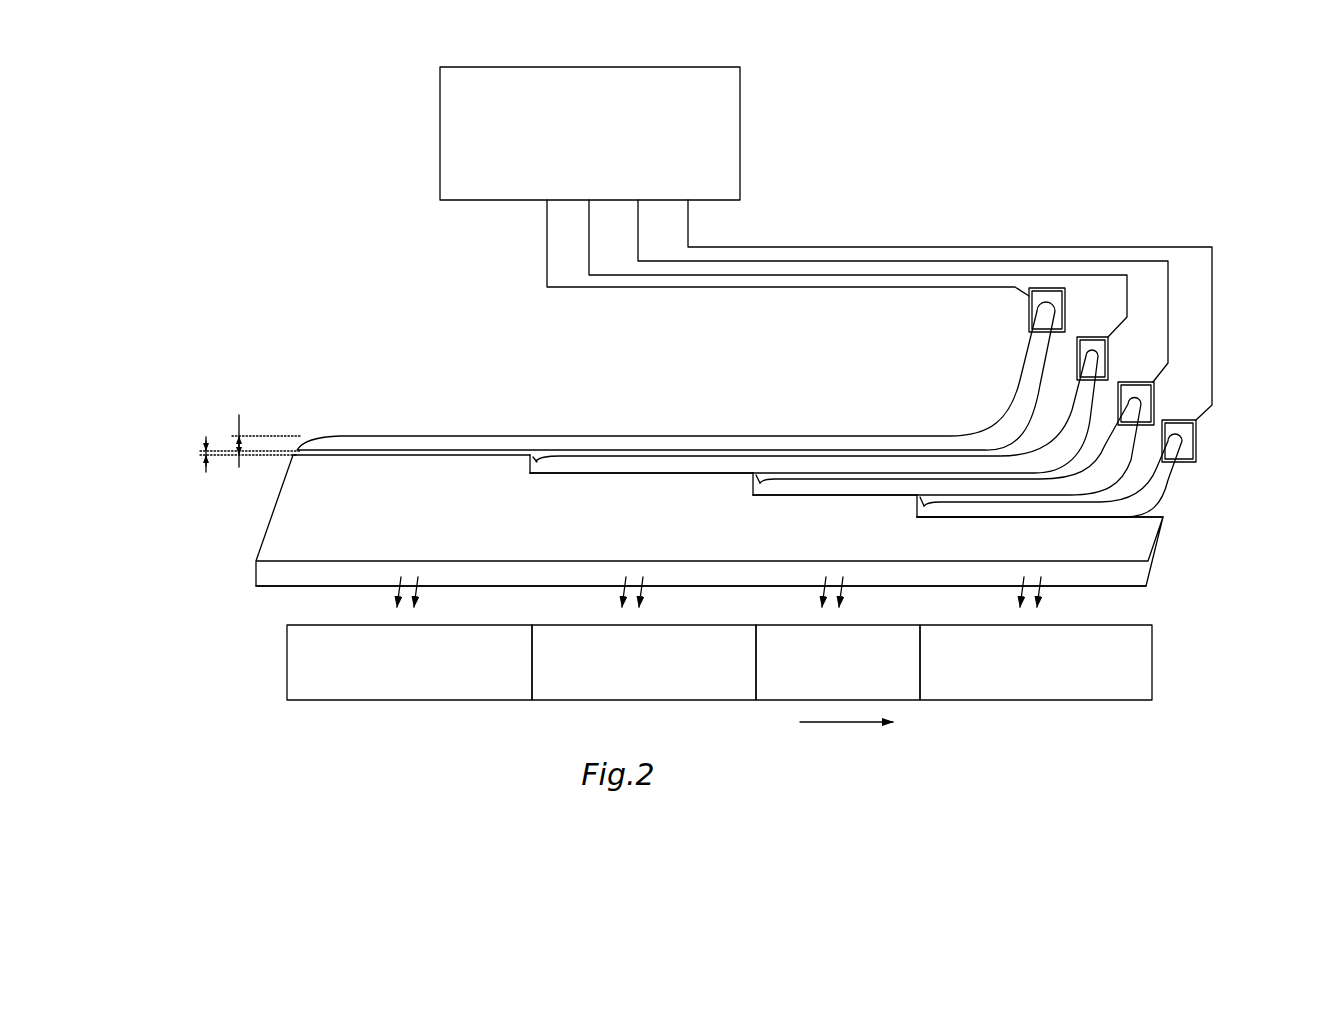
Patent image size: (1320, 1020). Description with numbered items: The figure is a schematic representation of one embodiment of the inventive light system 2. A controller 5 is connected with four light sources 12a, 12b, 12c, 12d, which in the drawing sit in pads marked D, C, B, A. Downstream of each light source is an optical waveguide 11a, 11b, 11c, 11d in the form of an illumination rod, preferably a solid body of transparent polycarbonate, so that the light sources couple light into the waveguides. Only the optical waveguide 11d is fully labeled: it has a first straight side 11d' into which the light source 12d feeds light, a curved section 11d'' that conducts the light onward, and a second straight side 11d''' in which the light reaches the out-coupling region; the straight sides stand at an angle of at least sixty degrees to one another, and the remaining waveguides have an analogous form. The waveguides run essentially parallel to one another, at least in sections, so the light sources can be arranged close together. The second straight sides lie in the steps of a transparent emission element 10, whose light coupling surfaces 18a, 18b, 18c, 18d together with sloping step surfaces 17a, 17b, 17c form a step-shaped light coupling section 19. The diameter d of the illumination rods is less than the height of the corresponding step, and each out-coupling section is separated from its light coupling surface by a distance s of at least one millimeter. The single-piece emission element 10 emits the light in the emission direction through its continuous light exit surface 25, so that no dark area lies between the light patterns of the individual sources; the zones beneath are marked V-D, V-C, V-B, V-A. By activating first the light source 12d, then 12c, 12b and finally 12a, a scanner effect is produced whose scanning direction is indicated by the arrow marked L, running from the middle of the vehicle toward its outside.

The controller 5 is at (590, 133).
The light system 2 is at (373, 320).
The emission element 10 is at (707, 506).
The light exit surface 25 is at (278, 578).
The step-shaped light coupling section 19 is at (594, 428).
The optical waveguide 11a is at (1158, 498).
The optical waveguide 11b is at (832, 482).
The optical waveguide 11c is at (636, 462).
The optical waveguide 11d is at (676, 376).
The straight side 11d' is at (996, 326).
The curved section 11d'' is at (957, 376).
The straight side 11d''' is at (858, 382).
The light source 12a is at (1174, 438).
The light source 12b is at (1137, 403).
The light source 12c is at (1091, 352).
The light source 12d is at (1043, 298).
The sloping step surface 17a is at (912, 505).
The sloping step surface 17b is at (749, 483).
The sloping step surface 17c is at (526, 463).
The light coupling surface 18a is at (1034, 520).
The light coupling surface 18b is at (808, 493).
The light coupling surface 18c is at (685, 480).
The light coupling surface 18d is at (398, 458).
The diameter d is at (250, 431).
The distance s is at (194, 454).
The scanning direction L is at (846, 735).
The pad label A is at (1191, 475).
The pad label B is at (1141, 435).
The pad label C is at (1106, 389).
The pad label D is at (1057, 346).
The voltage zone D V-D is at (409, 638).
The voltage zone C V-C is at (644, 638).
The voltage zone B V-B is at (838, 638).
The voltage zone A V-A is at (1036, 638).